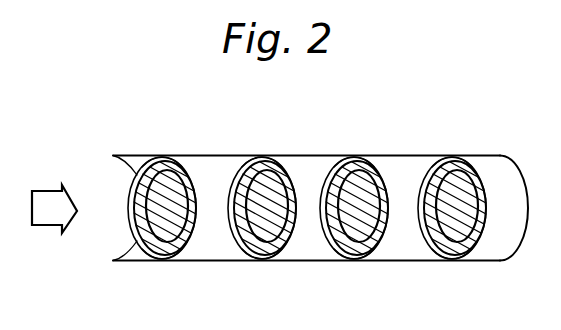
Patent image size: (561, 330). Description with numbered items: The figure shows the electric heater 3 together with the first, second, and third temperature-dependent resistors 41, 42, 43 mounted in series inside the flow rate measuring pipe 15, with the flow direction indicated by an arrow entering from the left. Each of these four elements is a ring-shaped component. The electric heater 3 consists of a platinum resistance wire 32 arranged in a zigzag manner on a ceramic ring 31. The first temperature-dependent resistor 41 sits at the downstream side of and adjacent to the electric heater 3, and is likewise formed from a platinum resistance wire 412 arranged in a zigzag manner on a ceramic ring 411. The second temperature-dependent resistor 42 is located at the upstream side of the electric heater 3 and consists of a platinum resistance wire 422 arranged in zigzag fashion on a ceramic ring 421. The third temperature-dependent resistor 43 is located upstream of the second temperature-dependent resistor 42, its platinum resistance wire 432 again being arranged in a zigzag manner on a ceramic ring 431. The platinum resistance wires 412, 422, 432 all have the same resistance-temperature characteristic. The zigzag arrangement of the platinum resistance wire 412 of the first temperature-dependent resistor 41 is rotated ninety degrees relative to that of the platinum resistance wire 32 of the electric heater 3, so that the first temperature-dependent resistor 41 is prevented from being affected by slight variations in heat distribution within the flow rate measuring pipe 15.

The third temperature-dependent resistor 43 is at (165, 262).
The ceramic ring 431 is at (165, 157).
The platinum resistance wire 432 is at (148, 262).
The second temperature-dependent resistor 42 is at (265, 262).
The ceramic ring 421 is at (265, 157).
The platinum resistance wire 422 is at (248, 262).
The electric heater 3 is at (365, 262).
The ceramic ring 31 is at (353, 157).
The platinum resistance wire 32 is at (337, 262).
The first temperature-dependent resistor 41 is at (465, 262).
The ceramic ring 411 is at (446, 157).
The platinum resistance wire 412 is at (442, 262).
The flow rate measuring pipe 15 is at (502, 158).